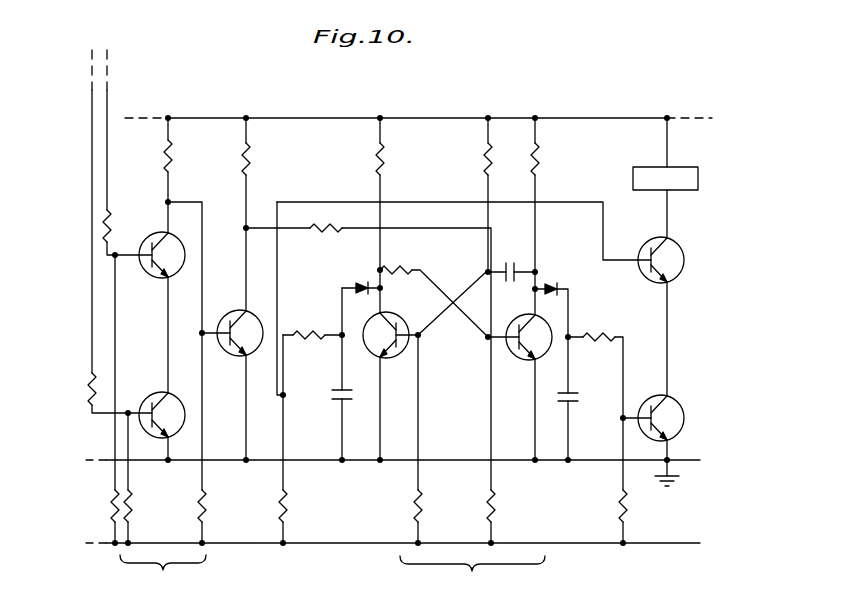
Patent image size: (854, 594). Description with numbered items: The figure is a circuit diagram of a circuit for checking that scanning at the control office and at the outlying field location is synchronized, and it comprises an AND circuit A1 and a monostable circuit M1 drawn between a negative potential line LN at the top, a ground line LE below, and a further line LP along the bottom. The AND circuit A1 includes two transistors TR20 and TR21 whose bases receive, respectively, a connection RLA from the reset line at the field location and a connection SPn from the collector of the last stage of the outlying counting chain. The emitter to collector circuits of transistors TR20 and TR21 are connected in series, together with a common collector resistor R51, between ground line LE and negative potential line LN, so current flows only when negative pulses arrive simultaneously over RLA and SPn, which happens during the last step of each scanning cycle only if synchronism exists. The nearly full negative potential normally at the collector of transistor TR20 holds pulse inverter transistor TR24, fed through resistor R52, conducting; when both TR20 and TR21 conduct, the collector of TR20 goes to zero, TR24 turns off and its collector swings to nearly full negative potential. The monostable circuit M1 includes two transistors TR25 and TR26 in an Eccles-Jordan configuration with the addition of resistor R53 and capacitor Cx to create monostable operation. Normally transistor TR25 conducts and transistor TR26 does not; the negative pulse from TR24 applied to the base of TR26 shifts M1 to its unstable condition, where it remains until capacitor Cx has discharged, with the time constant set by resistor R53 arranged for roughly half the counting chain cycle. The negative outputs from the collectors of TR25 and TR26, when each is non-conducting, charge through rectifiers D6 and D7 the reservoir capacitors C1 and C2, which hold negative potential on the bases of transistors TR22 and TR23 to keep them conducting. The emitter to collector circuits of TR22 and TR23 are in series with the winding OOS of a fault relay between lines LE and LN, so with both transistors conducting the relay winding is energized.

The negative potential line LN is at (418, 106).
The ground line LE is at (393, 473).
The line LP is at (393, 558).
The connection from collector of last-stage transistor SPn is at (92, 140).
The connection from reset line RLA is at (107, 95).
The common collector resistor R51 is at (174, 160).
The resistor R52 is at (258, 165).
The resistor R53 is at (485, 162).
The transistor TR20 is at (128, 260).
The transistor TR21 is at (158, 392).
The transistor TR22 is at (645, 284).
The transistor TR23 is at (677, 400).
The pulse inverter transistor TR24 is at (226, 357).
The transistor TR25 is at (408, 305).
The transistor TR26 is at (521, 360).
The rectifier D6 is at (352, 277).
The rectifier D7 is at (554, 326).
The capacitor Cx is at (511, 258).
The reservoir capacitor C1 is at (326, 375).
The reservoir capacitor C2 is at (563, 400).
The fault relay winding OOS is at (665, 176).
The AND circuit A1 is at (163, 574).
The monostable circuit M1 is at (472, 575).